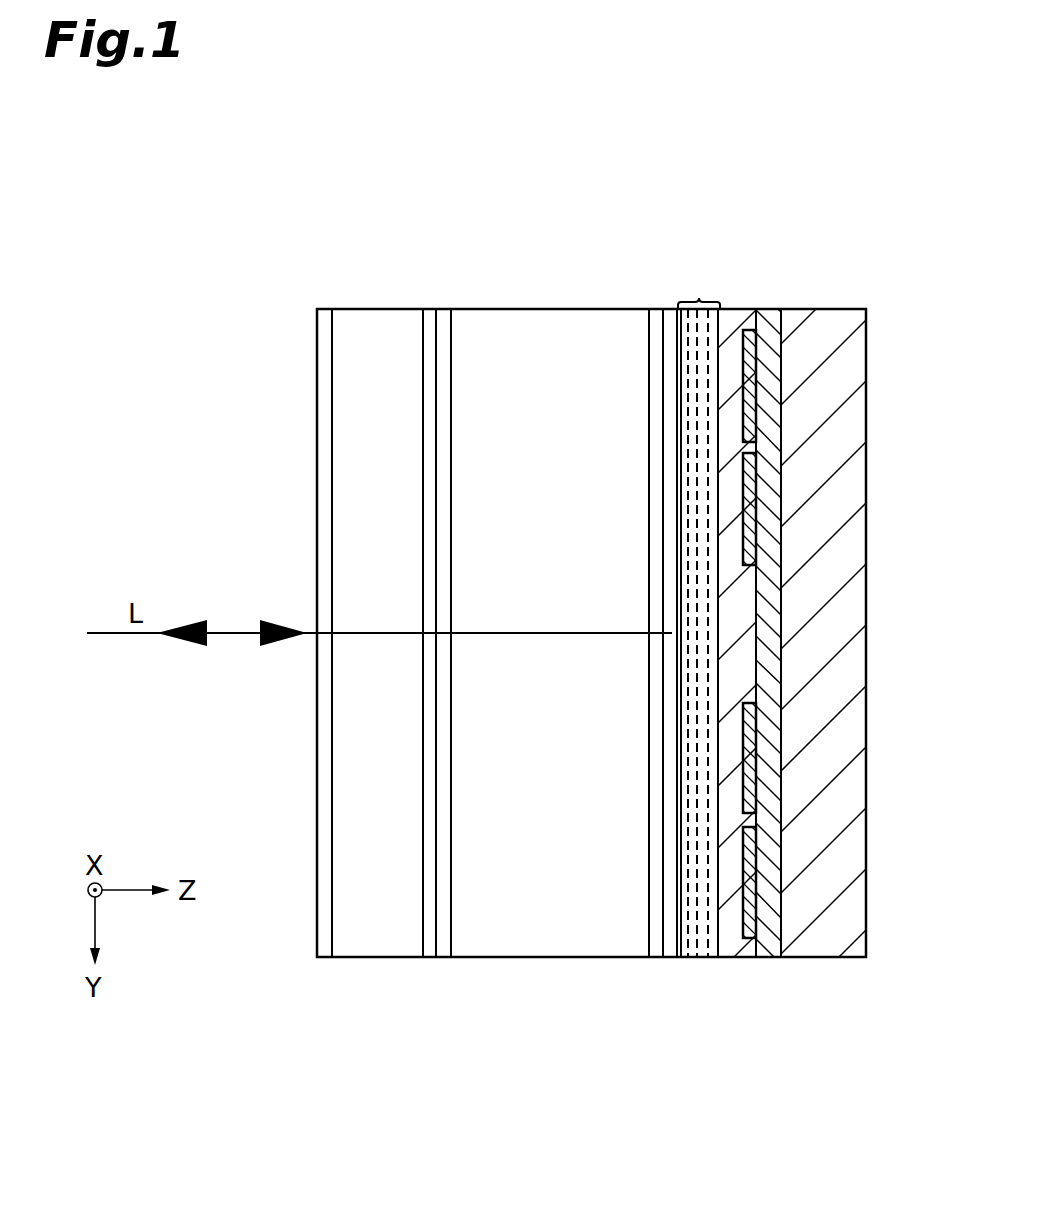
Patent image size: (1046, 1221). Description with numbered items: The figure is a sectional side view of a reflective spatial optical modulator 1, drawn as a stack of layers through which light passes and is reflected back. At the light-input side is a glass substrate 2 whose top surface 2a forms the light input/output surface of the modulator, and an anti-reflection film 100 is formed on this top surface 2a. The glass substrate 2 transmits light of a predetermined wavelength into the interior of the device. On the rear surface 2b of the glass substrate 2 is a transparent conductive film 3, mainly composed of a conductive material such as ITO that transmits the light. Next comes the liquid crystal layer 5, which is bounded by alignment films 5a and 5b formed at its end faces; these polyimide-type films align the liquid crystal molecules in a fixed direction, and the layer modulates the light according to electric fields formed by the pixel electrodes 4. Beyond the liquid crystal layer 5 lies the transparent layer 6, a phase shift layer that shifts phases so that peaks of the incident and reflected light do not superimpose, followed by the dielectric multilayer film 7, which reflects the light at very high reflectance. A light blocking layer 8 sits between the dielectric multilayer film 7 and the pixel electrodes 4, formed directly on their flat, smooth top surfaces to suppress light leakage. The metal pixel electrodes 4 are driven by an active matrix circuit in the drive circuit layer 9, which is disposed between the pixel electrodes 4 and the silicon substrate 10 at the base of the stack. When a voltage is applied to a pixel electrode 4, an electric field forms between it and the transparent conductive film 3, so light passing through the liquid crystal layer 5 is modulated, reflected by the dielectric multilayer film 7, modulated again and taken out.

The reflective spatial optical modulator 1 is at (826, 191).
The anti-reflection film 100 is at (325, 322).
The glass substrate 2 is at (378, 322).
The top surface 2a is at (331, 940).
The rear surface 2b is at (429, 940).
The transparent conductive film 3 is at (431, 322).
The pixel electrodes 4 is at (744, 914).
The liquid crystal layer 5 is at (568, 322).
The alignment film 5a is at (443, 322).
The alignment film 5b is at (656, 322).
The transparent layer 6 is at (670, 322).
The dielectric multilayer film 7 is at (700, 297).
The light blocking layer 8 is at (737, 322).
The drive circuit layer 9 is at (770, 322).
The silicon substrate 10 is at (822, 326).